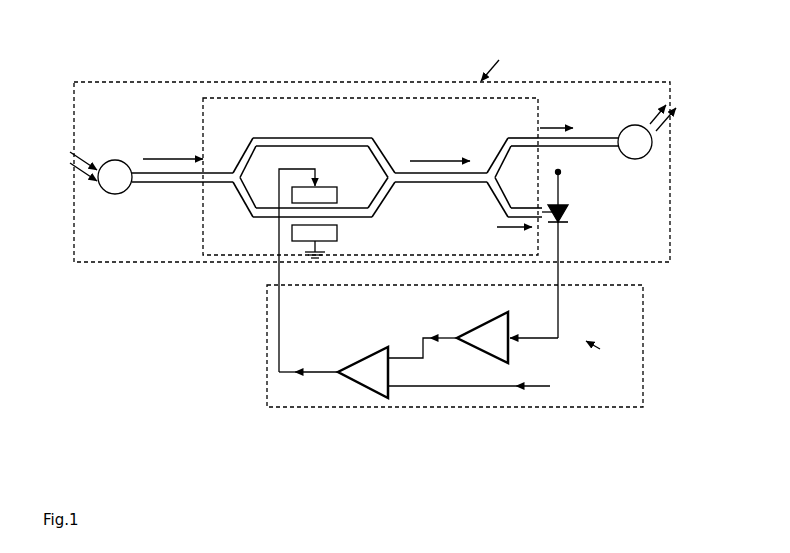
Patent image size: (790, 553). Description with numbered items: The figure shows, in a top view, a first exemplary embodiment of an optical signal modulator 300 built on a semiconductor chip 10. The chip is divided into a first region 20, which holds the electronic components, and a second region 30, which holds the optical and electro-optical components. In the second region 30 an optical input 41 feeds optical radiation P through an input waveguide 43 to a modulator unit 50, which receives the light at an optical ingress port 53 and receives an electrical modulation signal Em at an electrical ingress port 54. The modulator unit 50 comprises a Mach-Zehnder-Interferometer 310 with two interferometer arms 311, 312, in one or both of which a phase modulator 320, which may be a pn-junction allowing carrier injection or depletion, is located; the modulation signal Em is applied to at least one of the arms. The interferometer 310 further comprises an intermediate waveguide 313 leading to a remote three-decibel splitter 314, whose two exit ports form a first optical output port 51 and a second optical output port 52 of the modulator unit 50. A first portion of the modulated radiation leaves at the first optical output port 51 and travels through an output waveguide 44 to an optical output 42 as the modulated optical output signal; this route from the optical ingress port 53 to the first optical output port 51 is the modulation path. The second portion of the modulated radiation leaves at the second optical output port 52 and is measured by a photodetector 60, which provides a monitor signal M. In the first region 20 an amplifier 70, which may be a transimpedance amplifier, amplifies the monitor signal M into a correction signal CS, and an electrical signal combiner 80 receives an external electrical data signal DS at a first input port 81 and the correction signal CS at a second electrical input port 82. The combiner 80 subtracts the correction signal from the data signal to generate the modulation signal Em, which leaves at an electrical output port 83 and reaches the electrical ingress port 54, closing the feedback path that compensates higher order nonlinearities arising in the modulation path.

The semiconductor chip 10 is at (156, 318).
The first region 20 is at (643, 351).
The second region 30 is at (408, 81).
The optical signal modulator 300 is at (183, 64).
The optical input 41 is at (87, 169).
The optical output 42 is at (647, 125).
The input waveguide 43 is at (160, 184).
The output waveguide 44 is at (606, 147).
The modulator unit 50 is at (314, 93).
The first optical output port 51 is at (537, 140).
The second optical output port 52 is at (534, 208).
The optical ingress port 53 is at (203, 183).
The electrical ingress port 54 is at (277, 258).
The photodetector 60 is at (567, 245).
The amplifier 70 is at (507, 337).
The electrical signal combiner 80 is at (427, 374).
The first input port 81 is at (391, 390).
The second electrical input port 82 is at (396, 346).
The electrical output port 83 is at (338, 373).
The Mach-Zehnder-Interferometer 310 is at (352, 138).
The interferometer arm 311 is at (246, 150).
The interferometer arm 312 is at (248, 207).
The intermediate waveguide 313 is at (456, 183).
The 3 dB splitter 314 is at (494, 158).
The phase modulator 320 is at (350, 228).